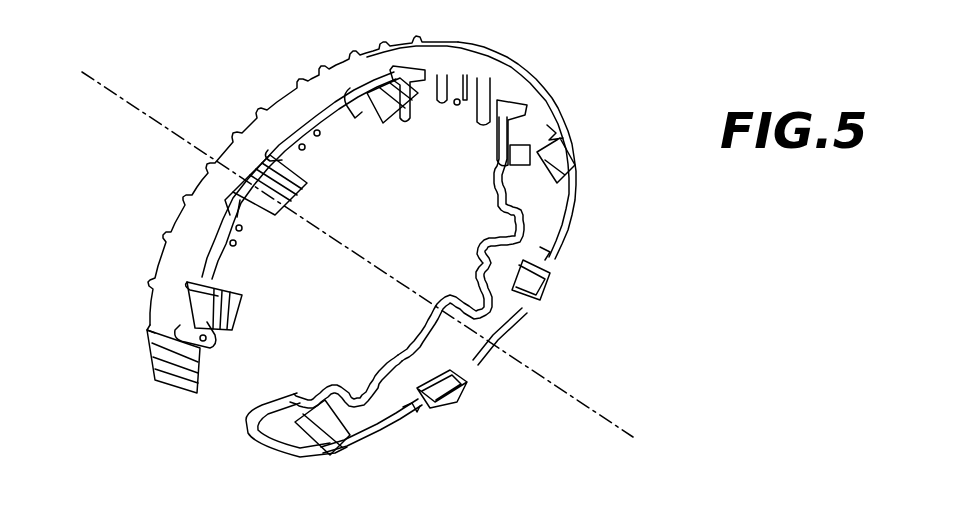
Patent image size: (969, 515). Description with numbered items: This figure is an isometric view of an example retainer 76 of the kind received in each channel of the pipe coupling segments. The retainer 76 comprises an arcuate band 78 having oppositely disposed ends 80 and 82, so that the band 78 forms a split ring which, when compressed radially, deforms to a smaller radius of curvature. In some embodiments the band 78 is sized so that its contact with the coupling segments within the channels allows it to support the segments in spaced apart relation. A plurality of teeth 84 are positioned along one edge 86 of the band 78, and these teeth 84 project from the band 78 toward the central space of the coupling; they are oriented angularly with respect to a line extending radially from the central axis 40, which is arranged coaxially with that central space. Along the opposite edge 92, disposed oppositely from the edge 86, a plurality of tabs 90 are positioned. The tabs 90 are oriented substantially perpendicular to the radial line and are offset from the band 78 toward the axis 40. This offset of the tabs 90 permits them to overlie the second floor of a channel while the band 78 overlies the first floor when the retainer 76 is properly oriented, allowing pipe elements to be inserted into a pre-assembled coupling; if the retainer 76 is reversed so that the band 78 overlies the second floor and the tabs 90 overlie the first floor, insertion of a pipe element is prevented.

The axis 40 is at (127, 97).
The retainer 76 is at (572, 217).
The arcuate band 78 is at (500, 317).
The end 80 is at (265, 447).
The end 82 is at (180, 395).
The teeth 84 is at (383, 363).
The edge 86 is at (432, 352).
The tabs 90 is at (553, 268).
The edge 92 is at (477, 377).